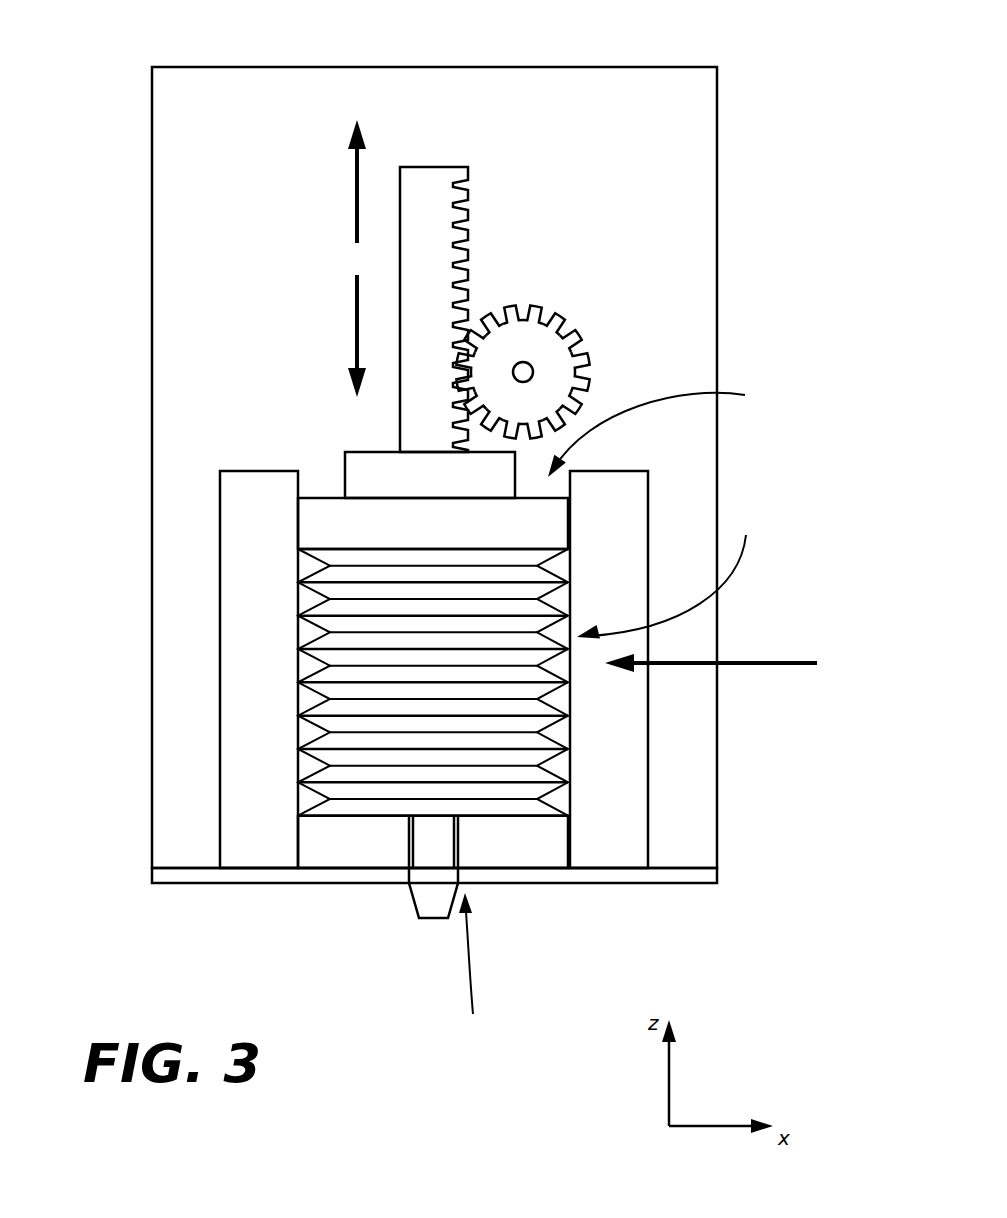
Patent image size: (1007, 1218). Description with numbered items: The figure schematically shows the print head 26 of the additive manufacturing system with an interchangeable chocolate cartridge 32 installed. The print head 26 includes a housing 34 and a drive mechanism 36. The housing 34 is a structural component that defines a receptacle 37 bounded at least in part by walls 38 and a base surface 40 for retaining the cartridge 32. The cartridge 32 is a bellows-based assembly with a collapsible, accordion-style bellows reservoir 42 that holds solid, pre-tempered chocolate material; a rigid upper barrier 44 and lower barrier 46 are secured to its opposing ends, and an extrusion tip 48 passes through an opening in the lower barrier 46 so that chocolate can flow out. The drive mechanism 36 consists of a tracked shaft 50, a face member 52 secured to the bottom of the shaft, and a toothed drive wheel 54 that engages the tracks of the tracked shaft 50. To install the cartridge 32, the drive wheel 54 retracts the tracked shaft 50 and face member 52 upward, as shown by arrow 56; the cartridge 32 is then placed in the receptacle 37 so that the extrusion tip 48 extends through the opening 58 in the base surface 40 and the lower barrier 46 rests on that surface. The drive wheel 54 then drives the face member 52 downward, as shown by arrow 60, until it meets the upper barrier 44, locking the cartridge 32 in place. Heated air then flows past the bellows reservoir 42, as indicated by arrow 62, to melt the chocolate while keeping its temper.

The print head 26 is at (96, 196).
The cartridge 32 is at (668, 575).
The housing 34 is at (702, 251).
The drive mechanism 36 is at (610, 184).
The receptacle 37 is at (662, 430).
The walls 38 is at (230, 627).
The base surface 40 is at (188, 878).
The bellows reservoir 42 is at (508, 792).
The upper barrier 44 is at (308, 524).
The lower barrier 46 is at (325, 855).
The extrusion tip 48 is at (426, 896).
The tracked shaft 50 is at (426, 180).
The face member 52 is at (375, 468).
The drive wheel 54 is at (540, 335).
The arrow 56 is at (353, 186).
The opening 58 is at (472, 971).
The arrow 60 is at (355, 348).
The arrow 62 is at (748, 663).